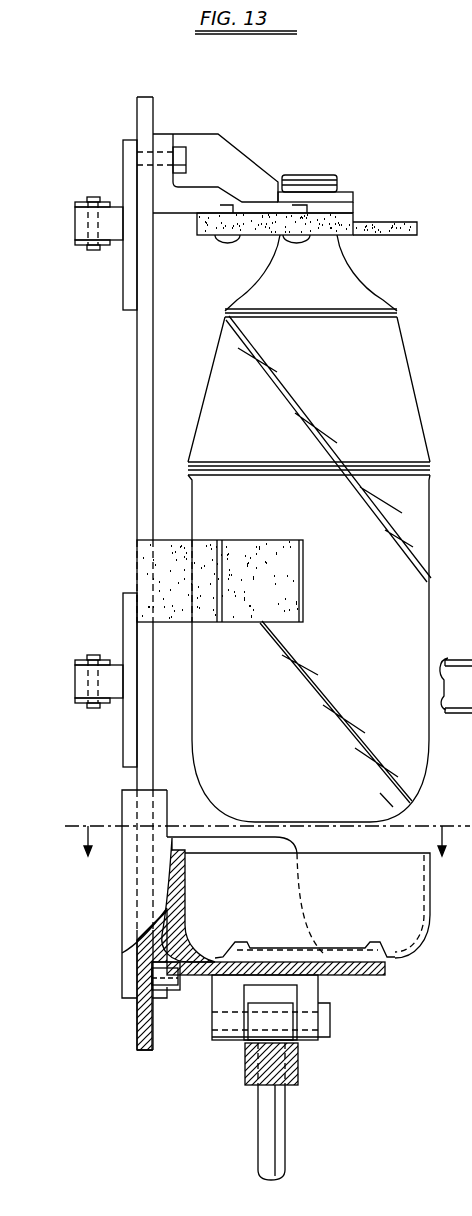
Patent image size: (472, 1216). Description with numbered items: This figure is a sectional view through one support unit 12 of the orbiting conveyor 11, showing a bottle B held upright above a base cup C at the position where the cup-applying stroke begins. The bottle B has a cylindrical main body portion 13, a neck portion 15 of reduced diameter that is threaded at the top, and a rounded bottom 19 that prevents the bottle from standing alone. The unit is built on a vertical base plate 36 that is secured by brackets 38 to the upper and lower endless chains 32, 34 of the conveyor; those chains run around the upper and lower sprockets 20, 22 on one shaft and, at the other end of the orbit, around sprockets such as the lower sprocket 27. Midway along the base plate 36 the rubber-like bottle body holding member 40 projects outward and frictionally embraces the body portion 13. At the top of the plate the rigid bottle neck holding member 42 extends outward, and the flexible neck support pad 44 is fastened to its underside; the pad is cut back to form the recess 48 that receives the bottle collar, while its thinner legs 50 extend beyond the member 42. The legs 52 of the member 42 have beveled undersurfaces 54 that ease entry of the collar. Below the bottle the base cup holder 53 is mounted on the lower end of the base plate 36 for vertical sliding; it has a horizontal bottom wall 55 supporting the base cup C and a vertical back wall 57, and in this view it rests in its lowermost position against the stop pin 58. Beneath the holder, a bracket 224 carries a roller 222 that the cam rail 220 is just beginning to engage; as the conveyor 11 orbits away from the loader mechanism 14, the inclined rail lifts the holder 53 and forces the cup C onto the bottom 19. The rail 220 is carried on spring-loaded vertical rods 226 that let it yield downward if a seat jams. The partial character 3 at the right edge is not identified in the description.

The orbiting conveyor 11 is at (88, 160).
The support unit 12 is at (282, 148).
The main body portion 13 is at (428, 532).
The loader mechanism 14 is at (262, 849).
The neck portion 15 is at (350, 261).
The bottom 19 is at (405, 798).
The upper sprocket 20 is at (77, 227).
The lower sprocket 22 is at (77, 681).
The lower sprocket 27 is at (456, 671).
The upper endless chain 32 is at (92, 250).
The lower endless chain 34 is at (93, 708).
The base plate 36 is at (140, 397).
The bracket 38 is at (128, 300).
The bottle body holding member 40 is at (265, 548).
The bottle neck holding member 42 is at (223, 152).
The neck support pad 44 is at (203, 236).
The recess 48 is at (262, 236).
The leg 50 is at (402, 222).
The leg 52 is at (340, 192).
The base cup holder 53 is at (121, 895).
The tapered undersurface 54 is at (277, 222).
The bottom wall 55 is at (366, 976).
The back wall 57 is at (180, 900).
The pin 58 is at (152, 975).
The cam rail 220 is at (250, 1068).
The roller 222 is at (245, 1040).
The bracket 224 is at (312, 995).
The vertical rod 226 is at (268, 1133).
The partial numeral 3 is at (466, 403).
The bottle B is at (398, 350).
The base cup C is at (415, 950).